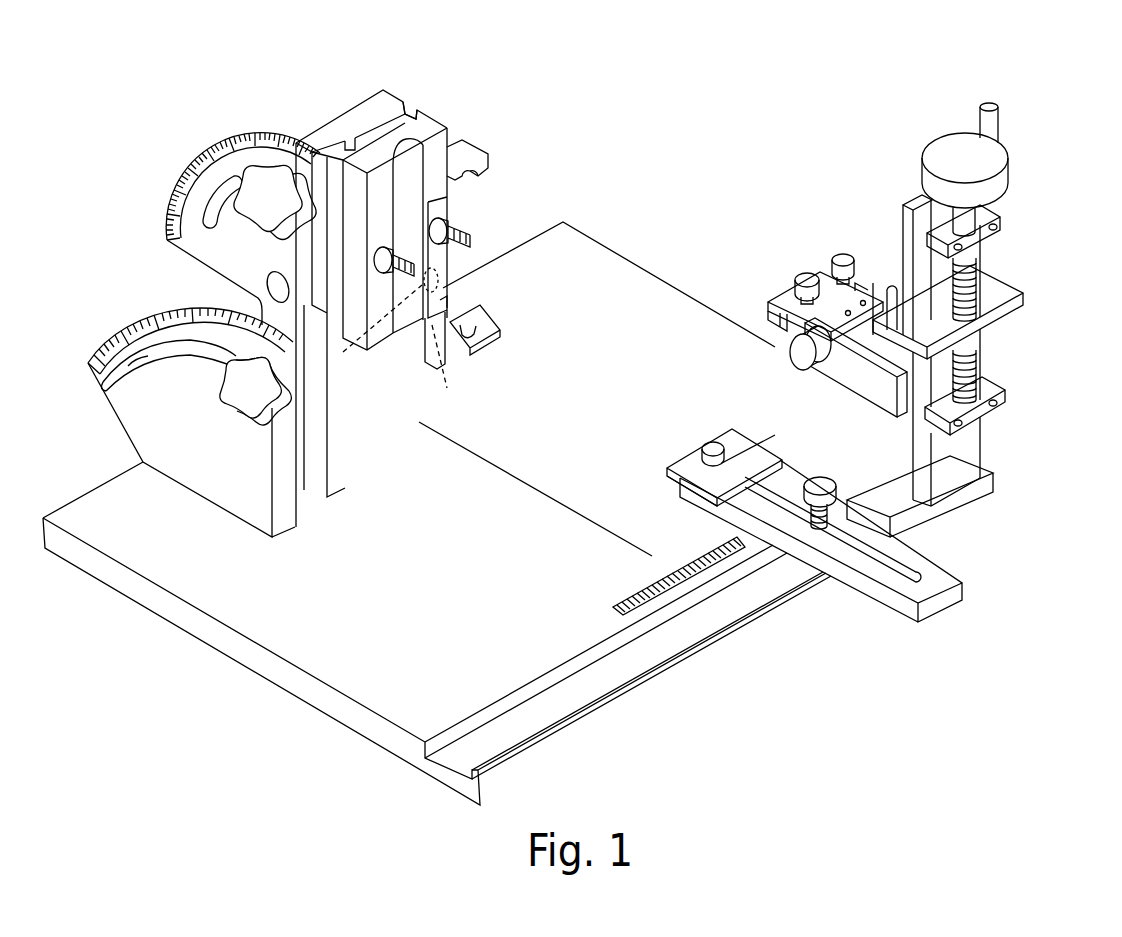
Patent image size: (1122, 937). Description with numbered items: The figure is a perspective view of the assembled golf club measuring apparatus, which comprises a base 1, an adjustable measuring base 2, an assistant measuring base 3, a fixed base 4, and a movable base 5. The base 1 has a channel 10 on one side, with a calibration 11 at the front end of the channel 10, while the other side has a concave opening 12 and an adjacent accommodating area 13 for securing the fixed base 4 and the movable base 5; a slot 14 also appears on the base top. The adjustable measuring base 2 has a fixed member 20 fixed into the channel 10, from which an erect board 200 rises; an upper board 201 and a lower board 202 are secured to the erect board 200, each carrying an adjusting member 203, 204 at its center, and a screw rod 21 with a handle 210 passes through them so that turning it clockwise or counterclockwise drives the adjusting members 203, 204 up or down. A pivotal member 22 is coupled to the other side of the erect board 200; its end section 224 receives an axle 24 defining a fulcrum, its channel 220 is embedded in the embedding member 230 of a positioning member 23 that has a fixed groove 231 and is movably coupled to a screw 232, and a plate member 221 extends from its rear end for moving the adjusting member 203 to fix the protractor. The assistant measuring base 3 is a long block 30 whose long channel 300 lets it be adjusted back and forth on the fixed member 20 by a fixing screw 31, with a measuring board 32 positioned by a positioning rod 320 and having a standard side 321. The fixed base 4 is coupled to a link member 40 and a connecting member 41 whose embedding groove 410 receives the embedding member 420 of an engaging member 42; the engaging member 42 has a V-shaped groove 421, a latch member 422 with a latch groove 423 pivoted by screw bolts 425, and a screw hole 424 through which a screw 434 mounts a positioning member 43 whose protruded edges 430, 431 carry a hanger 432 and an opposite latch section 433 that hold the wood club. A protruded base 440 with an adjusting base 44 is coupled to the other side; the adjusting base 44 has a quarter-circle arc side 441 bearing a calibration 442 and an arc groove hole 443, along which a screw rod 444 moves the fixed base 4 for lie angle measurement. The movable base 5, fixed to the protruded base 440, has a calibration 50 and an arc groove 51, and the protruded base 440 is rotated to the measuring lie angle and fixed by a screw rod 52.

The base 1 is at (350, 665).
The channel 10 is at (738, 593).
The calibration 11 is at (647, 603).
The concave opening 12 is at (457, 317).
The accommodating area 13 is at (218, 510).
The slot 14 is at (523, 487).
The adjustable measuring base 2 is at (1048, 264).
The fixed member 20 is at (897, 505).
The erect board 200 is at (968, 462).
The upper board 201 is at (993, 222).
The lower board 202 is at (993, 390).
The adjusting member 203 is at (1002, 293).
The adjusting member 204 is at (891, 300).
The screw rod 21 is at (978, 270).
The handle 210 is at (990, 128).
The pivotal member 22 is at (870, 383).
The channel 220 is at (860, 317).
The plate member 221 is at (912, 215).
The end section 224 is at (880, 290).
The positioning member 23 is at (764, 282).
The embedding member 230 is at (847, 298).
The fixed groove 231 is at (753, 307).
The screw 232 is at (805, 275).
The axle 24 is at (798, 358).
The assistant measuring base 3 is at (932, 634).
The long block 30 is at (953, 586).
The long channel 300 is at (908, 578).
The fixing screw 31 is at (820, 483).
The measuring board 32 is at (747, 453).
The positioning rod 320 is at (708, 440).
The standard side 321 is at (678, 480).
The fixed base 4 is at (356, 96).
The link member 40 is at (381, 94).
The connecting member 41 is at (348, 148).
The embedding groove 410 is at (410, 97).
The engaging member 42 is at (425, 124).
The embedding member 420 is at (410, 116).
The V-shaped groove 421 is at (415, 157).
The latch member 422 is at (443, 210).
The latch groove 423 is at (447, 300).
The screw hole 424 is at (457, 376).
The screw bolt 425 is at (470, 245).
The positioning member 43 is at (430, 358).
The protruded edge 430 is at (470, 147).
The protruded edge 431 is at (490, 333).
The hanger 432 is at (473, 157).
The latch section 433 is at (467, 350).
The screw 434 is at (372, 341).
The adjusting base 44 is at (233, 247).
The protruded base 440 is at (310, 470).
The arc side 441 is at (248, 143).
The calibration 442 is at (192, 173).
The arc groove hole 443 is at (193, 222).
The screw rod 444 is at (263, 188).
The movable base 5 is at (120, 306).
The calibration 50 is at (120, 340).
The arc groove 51 is at (133, 357).
The screw rod 52 is at (250, 397).